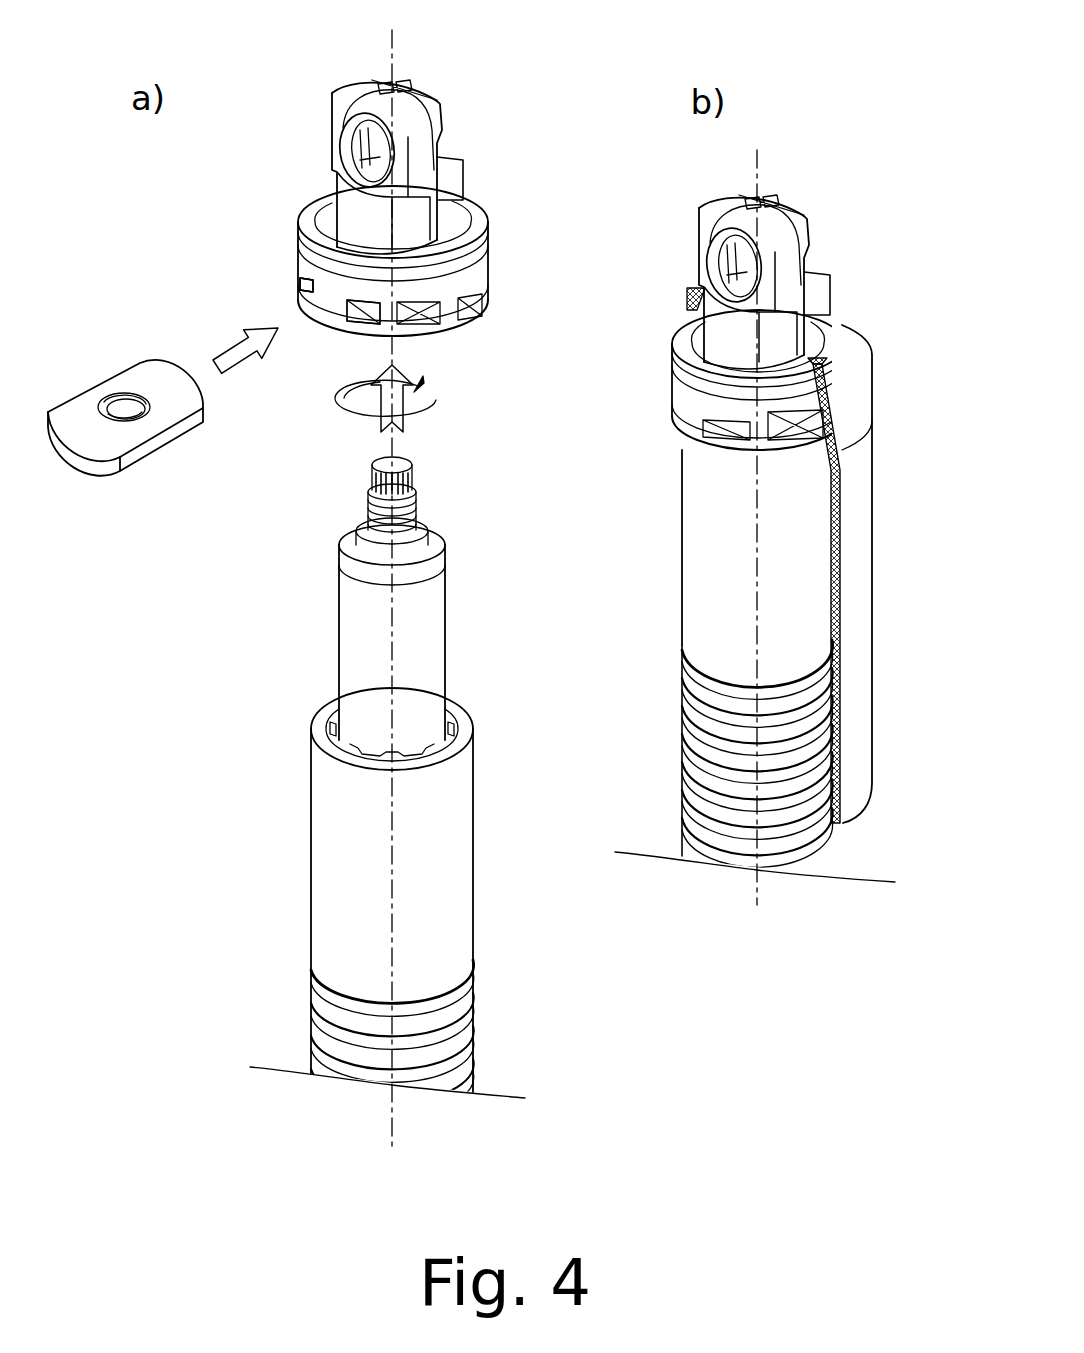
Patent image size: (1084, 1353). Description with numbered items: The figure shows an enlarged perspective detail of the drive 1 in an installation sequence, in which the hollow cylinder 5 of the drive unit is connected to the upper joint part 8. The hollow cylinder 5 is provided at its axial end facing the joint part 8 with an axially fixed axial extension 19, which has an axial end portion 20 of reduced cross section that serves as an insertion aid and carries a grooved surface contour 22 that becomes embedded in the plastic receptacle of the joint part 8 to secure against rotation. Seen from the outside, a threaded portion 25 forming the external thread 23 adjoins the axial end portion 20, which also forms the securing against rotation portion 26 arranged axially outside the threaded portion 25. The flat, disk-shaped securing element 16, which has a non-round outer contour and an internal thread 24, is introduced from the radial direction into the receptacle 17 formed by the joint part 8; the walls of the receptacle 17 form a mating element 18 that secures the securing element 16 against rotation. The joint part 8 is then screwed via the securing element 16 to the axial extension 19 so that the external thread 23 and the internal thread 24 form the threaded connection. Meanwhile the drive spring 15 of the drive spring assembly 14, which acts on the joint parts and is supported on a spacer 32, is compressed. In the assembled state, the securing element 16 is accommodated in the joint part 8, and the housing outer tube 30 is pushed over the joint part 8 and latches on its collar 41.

The drive 1 is at (884, 465).
The hollow cylinder 5 is at (383, 572).
The joint part 8 is at (333, 128).
The drive spring assembly 14 is at (639, 877).
The drive spring 15 is at (464, 1048).
The securing element 16 is at (381, 411).
The receptacle 17 is at (300, 304).
The mating element 18 is at (309, 280).
The axial extension 19 is at (392, 501).
The axial end portion 20 is at (366, 449).
The surface contour 22 is at (415, 471).
The external thread 23 is at (396, 518).
The internal thread 24 is at (131, 408).
The threaded portion 25 is at (420, 541).
The securing against rotation portion 26 is at (366, 449).
The housing outer tube 30 is at (862, 398).
The spacer 32 is at (322, 822).
The collar 41 is at (442, 242).